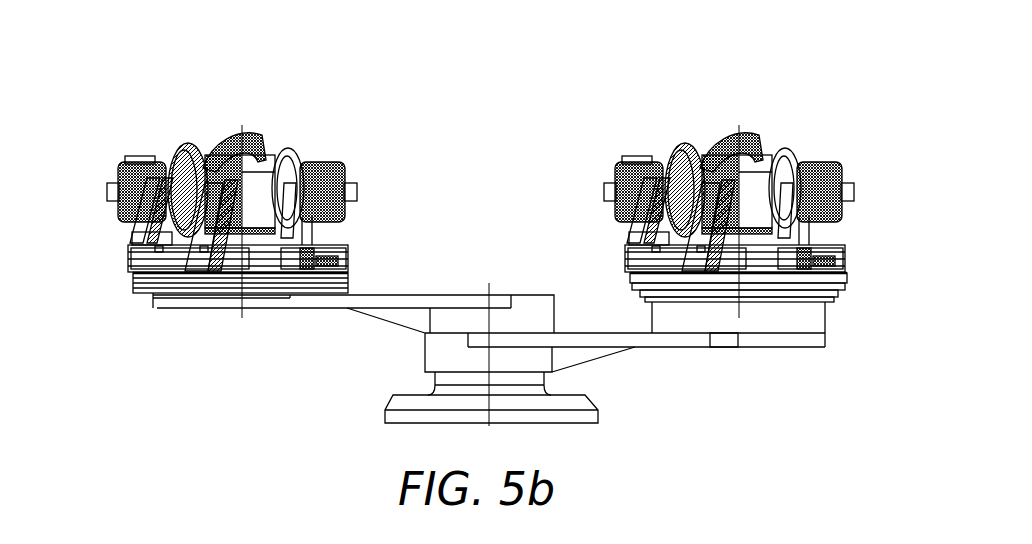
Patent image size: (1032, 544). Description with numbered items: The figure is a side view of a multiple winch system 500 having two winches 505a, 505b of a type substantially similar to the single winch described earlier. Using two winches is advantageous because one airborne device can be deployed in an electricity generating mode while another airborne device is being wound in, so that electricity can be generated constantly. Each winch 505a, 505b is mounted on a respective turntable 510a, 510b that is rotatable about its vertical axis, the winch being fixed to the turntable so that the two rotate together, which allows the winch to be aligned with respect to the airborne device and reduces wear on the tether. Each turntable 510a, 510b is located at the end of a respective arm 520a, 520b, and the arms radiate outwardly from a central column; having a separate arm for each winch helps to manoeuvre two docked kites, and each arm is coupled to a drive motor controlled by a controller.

The multiple winch system 500 is at (690, 83).
The winch 505a is at (306, 157).
The winch 505b is at (786, 152).
The turntable 510a is at (131, 289).
The turntable 510b is at (845, 276).
The arm 520a is at (310, 302).
The arm 520b is at (729, 344).